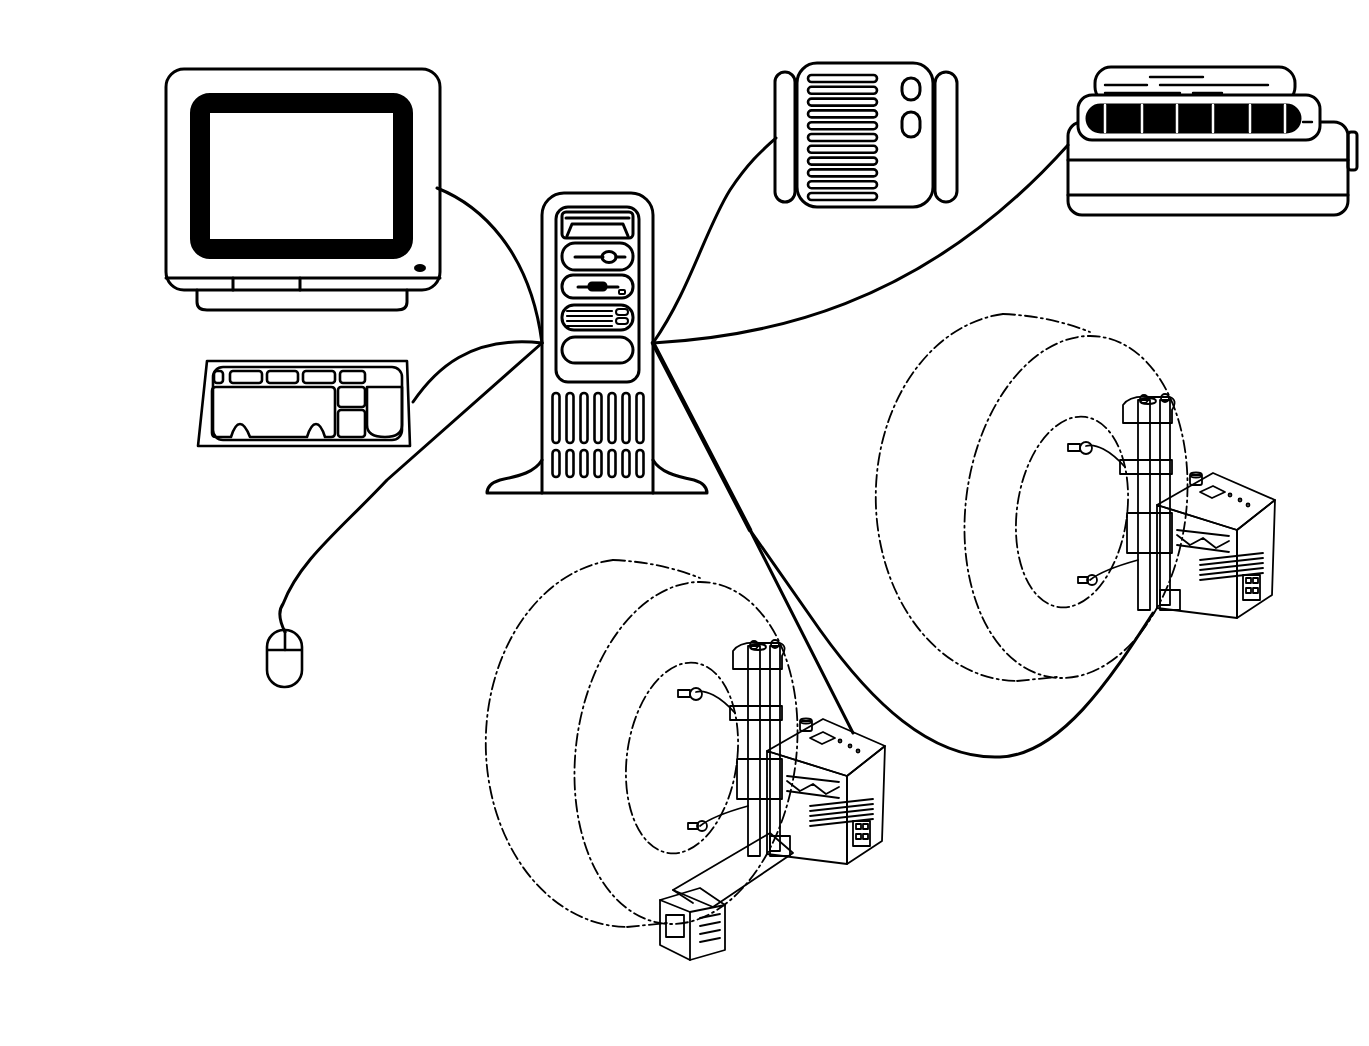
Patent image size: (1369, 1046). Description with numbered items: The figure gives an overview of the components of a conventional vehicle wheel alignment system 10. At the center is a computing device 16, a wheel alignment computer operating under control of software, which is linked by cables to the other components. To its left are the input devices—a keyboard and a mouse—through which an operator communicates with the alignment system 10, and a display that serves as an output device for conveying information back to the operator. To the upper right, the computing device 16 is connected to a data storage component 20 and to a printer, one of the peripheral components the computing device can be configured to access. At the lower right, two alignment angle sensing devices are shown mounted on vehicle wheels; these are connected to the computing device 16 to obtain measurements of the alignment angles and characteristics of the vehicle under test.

The vehicle wheel alignment system 10 is at (594, 112).
The computing device 16 is at (597, 359).
The data storage component 20 is at (866, 149).